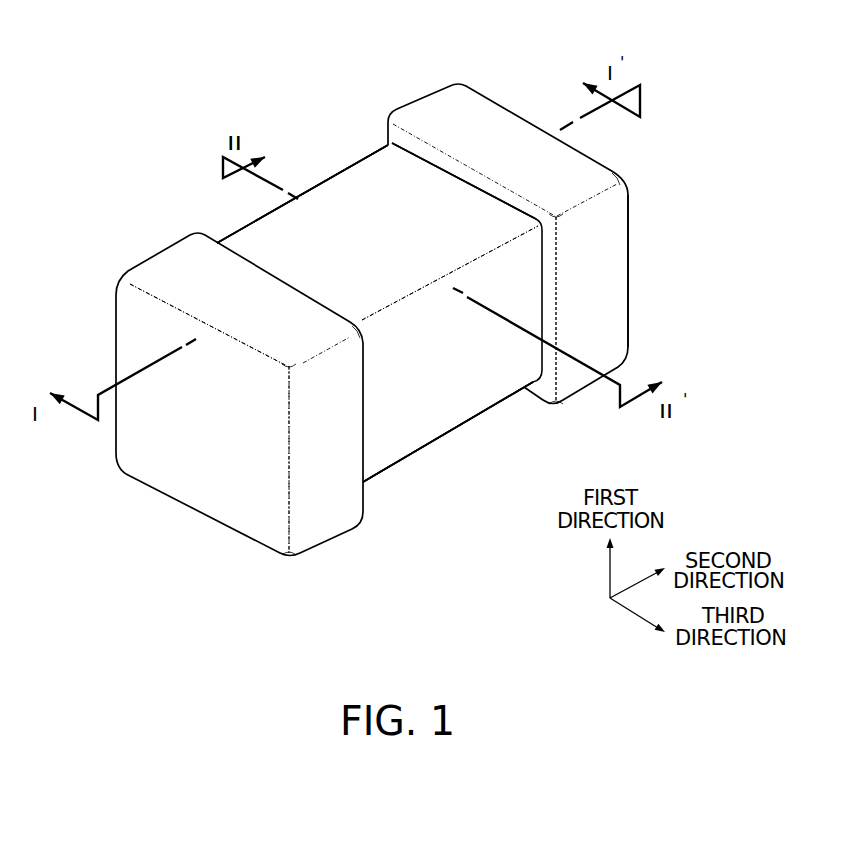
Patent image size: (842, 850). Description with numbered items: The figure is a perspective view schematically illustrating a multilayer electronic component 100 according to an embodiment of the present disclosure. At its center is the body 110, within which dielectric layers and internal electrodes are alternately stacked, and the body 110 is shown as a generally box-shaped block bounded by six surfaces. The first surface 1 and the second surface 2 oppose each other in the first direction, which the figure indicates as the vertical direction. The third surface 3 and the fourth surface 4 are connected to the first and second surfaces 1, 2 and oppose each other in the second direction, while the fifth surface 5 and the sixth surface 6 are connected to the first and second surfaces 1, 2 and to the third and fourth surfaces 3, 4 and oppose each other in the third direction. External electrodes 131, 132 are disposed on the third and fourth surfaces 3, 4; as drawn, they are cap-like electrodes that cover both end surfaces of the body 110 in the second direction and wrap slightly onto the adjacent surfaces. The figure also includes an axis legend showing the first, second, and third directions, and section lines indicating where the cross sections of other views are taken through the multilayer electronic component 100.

The multilayer electronic component 100 is at (408, 293).
The body 110 is at (252, 253).
The external electrode 131 is at (174, 268).
The external electrode 132 is at (430, 121).
The first surface 1 is at (413, 403).
The second surface 2 is at (388, 202).
The third surface 3 is at (210, 450).
The fourth surface 4 is at (578, 258).
The fifth surface 5 is at (337, 222).
The sixth surface 6 is at (470, 375).